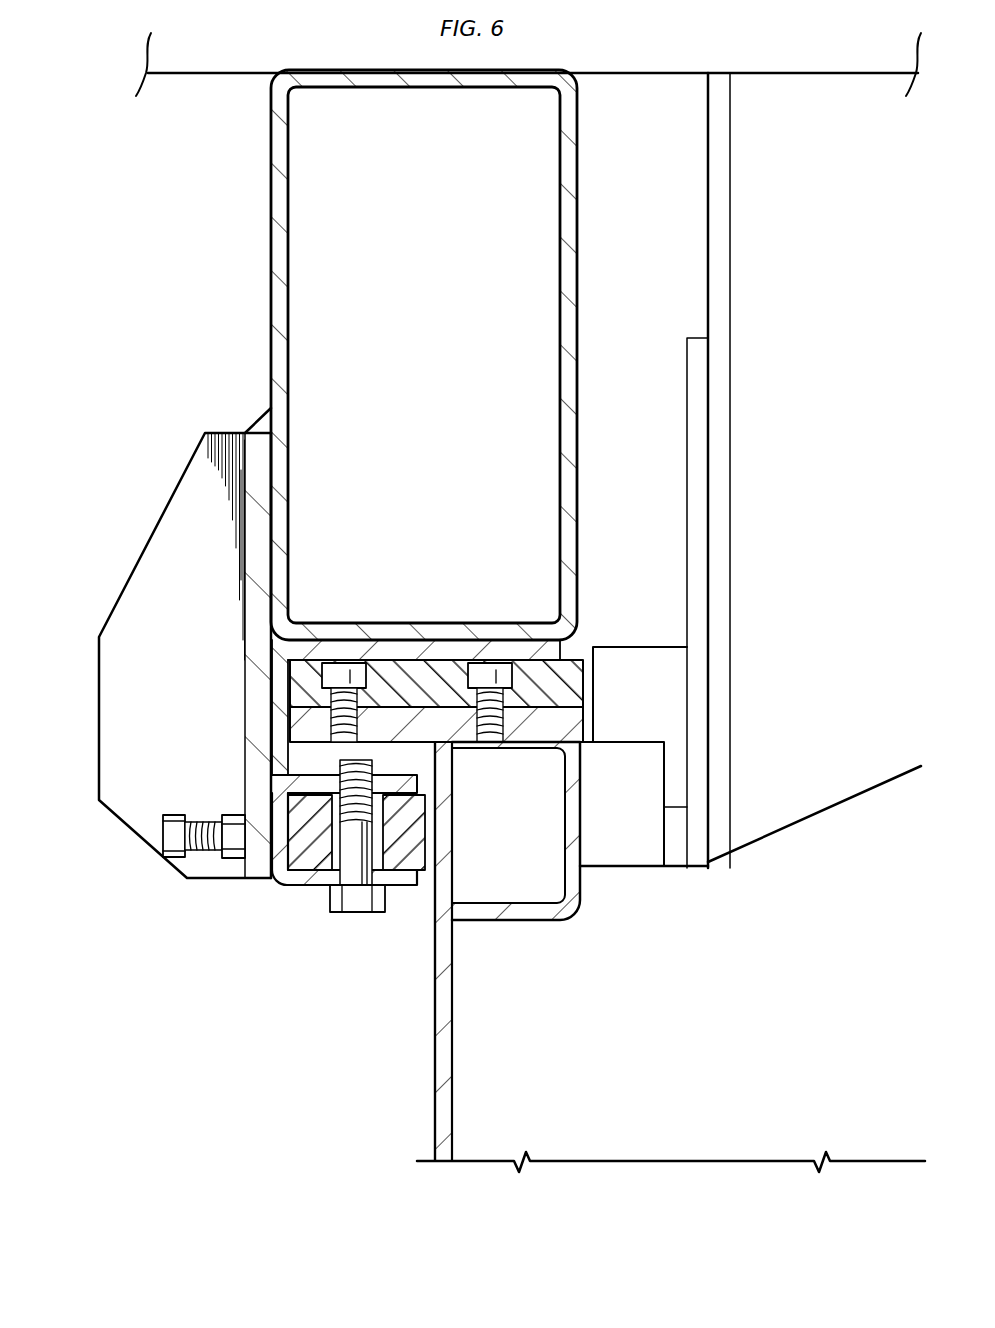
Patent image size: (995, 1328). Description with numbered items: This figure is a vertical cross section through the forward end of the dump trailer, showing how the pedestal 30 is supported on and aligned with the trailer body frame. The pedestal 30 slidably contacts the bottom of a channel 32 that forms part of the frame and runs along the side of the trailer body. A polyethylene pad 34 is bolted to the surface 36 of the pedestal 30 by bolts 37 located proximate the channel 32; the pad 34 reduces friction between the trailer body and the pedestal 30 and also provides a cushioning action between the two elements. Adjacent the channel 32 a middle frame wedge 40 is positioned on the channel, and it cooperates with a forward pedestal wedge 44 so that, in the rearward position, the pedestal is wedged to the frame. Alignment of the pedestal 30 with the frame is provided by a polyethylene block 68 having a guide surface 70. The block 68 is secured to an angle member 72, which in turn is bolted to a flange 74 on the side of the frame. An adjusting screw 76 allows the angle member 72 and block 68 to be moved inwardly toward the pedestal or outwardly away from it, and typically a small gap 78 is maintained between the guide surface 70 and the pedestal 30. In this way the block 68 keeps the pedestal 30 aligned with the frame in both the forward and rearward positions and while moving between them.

The pedestal 30 is at (433, 1029).
The channel 32 is at (288, 272).
The polyethylene pad 34 is at (578, 658).
The surface 36 is at (565, 708).
The bolt 37 is at (344, 666).
The middle frame wedge 40 is at (672, 724).
The forward pedestal wedge 44 is at (639, 814).
The polyethylene block 68 is at (310, 862).
The guide surface 70 is at (435, 862).
The angle member 72 is at (283, 882).
The flange 74 is at (300, 775).
The adjusting screw 76 is at (211, 818).
The gap 78 is at (431, 802).